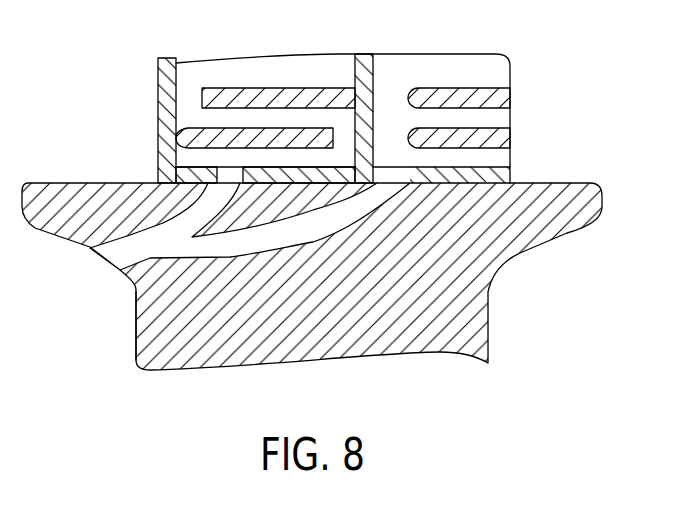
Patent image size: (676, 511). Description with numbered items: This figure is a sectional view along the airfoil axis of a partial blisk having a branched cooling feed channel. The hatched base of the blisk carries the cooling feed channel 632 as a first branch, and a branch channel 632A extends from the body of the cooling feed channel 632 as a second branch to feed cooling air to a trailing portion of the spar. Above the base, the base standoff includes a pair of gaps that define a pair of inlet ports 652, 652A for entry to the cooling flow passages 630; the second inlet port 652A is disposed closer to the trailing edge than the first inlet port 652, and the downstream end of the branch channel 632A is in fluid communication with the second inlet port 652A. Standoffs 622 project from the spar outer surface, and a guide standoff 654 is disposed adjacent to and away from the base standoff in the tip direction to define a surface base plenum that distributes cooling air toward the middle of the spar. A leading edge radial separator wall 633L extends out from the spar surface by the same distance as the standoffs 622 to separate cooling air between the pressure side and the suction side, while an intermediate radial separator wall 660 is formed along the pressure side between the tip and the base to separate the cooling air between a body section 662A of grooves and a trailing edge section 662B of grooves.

The standoffs 622 is at (272, 88).
The cooling flow passages 630 is at (228, 153).
The cooling feed channel 632 is at (108, 252).
The branch channel 632A is at (136, 294).
The leading edge radial separator wall 633L is at (163, 95).
The first inlet port 652 is at (215, 178).
The second inlet port 652A is at (400, 175).
The guide standoff 654 is at (172, 136).
The intermediate radial separator wall 660 is at (374, 88).
The body section of grooves 662A is at (301, 112).
The trailing edge section of grooves 662B is at (499, 116).